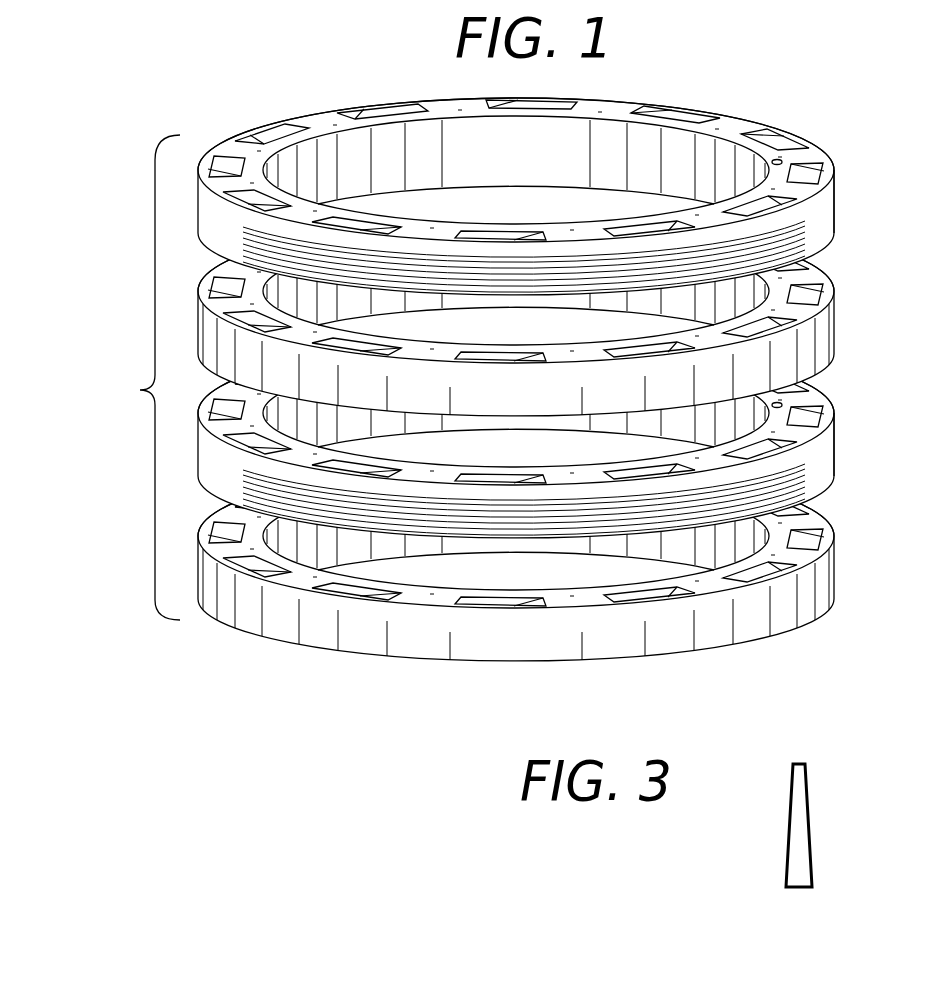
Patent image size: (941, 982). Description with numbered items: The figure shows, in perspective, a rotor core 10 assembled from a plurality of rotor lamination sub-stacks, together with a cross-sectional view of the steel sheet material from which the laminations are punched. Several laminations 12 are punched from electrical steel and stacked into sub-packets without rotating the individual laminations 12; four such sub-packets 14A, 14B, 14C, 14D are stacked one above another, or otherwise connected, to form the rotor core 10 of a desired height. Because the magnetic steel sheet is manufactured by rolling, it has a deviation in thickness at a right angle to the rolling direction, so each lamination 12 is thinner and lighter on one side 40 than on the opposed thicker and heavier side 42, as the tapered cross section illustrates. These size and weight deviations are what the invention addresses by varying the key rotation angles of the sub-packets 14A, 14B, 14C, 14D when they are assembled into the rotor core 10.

In FIG. 1, the rotor core 10 is at (142, 377).
In FIG. 1, the lamination 12 is at (837, 188).
In FIG. 3, the lamination 12 is at (835, 797).
In FIG. 1, the sub-packet 14A is at (781, 152).
In FIG. 1, the sub-packet 14B is at (838, 326).
In FIG. 1, the sub-packet 14C is at (786, 398).
In FIG. 1, the sub-packet 14D is at (835, 568).
In FIG. 3, the thin side 40 is at (783, 793).
In FIG. 3, the thick side 42 is at (780, 862).